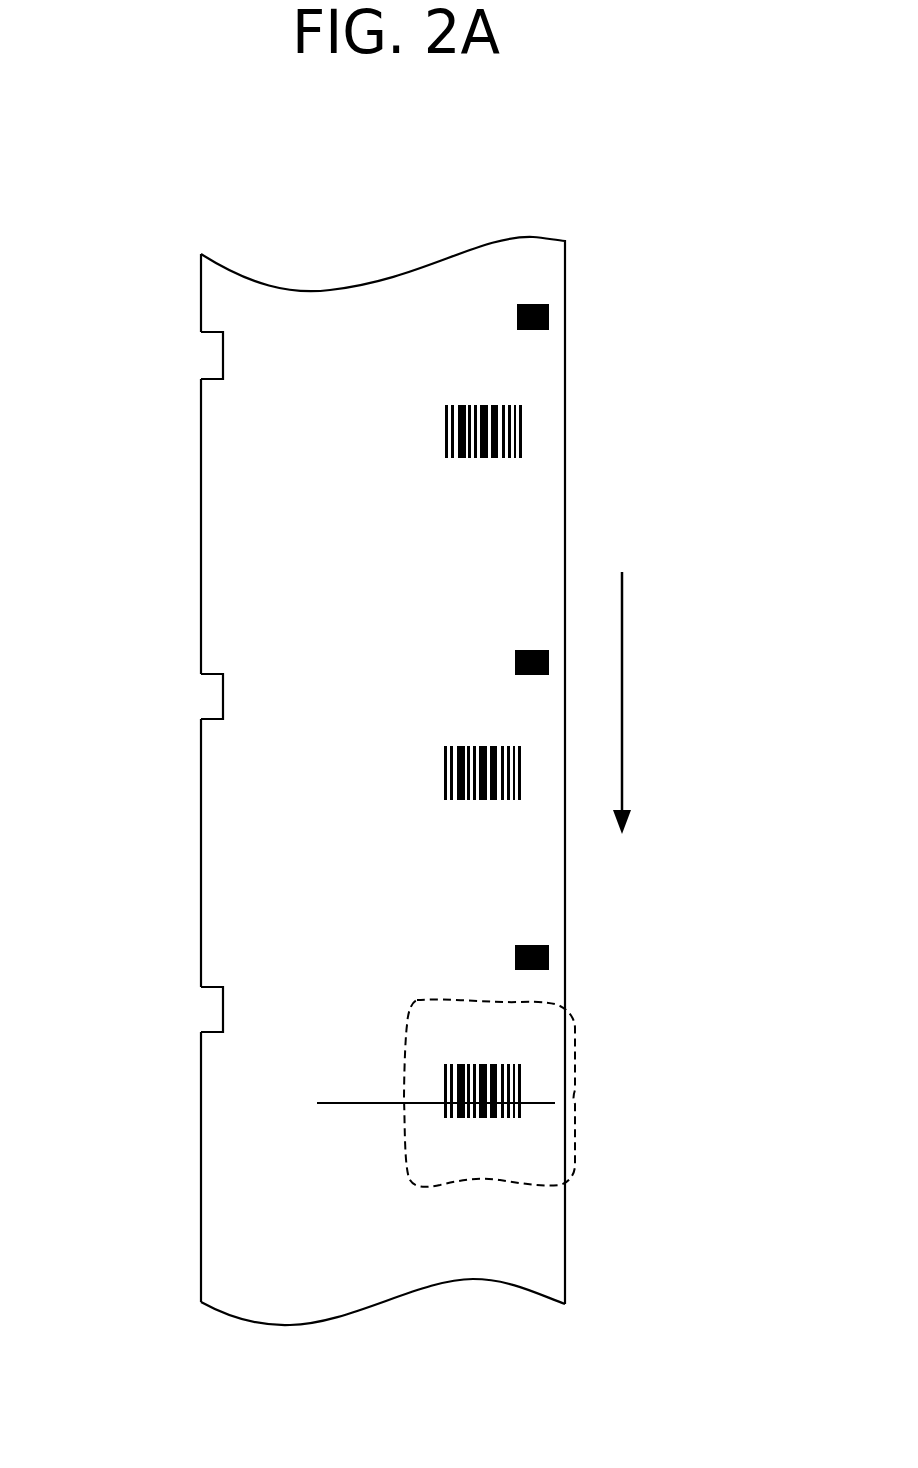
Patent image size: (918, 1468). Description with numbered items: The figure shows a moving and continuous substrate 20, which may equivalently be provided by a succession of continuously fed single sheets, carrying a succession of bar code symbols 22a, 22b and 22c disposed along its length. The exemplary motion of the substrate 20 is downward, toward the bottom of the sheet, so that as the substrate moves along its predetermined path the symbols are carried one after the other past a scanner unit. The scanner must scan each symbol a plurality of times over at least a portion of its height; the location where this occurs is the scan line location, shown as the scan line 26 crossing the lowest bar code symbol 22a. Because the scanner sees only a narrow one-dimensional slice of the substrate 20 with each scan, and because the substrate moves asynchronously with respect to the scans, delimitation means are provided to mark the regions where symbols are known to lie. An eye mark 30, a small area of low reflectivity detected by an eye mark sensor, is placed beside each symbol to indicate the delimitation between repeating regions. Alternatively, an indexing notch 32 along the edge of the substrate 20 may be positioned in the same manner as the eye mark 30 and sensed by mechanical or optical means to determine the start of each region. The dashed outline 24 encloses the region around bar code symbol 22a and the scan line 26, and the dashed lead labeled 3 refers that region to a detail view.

The substrate 20 is at (618, 249).
The bar code symbol 22a is at (462, 1118).
The bar code symbol 22b is at (473, 745).
The bar code symbol 22c is at (522, 438).
The eye mark 30 is at (517, 308).
The indexing notch 32 is at (212, 355).
The detail region shown in FIG. 3 24 is at (600, 1030).
The scan line 26 is at (325, 1102).
The FIG. 3 view reference 3 is at (577, 1104).